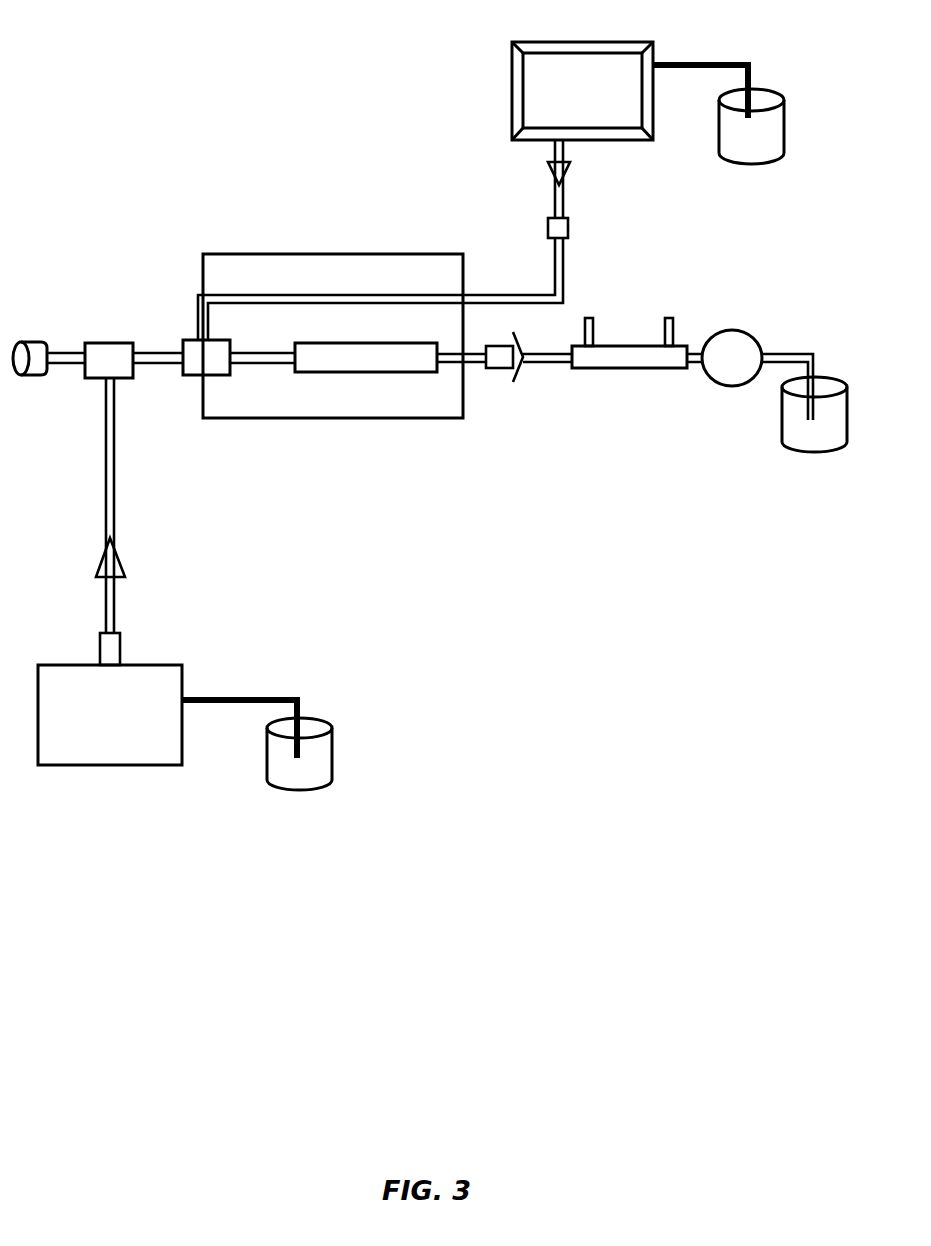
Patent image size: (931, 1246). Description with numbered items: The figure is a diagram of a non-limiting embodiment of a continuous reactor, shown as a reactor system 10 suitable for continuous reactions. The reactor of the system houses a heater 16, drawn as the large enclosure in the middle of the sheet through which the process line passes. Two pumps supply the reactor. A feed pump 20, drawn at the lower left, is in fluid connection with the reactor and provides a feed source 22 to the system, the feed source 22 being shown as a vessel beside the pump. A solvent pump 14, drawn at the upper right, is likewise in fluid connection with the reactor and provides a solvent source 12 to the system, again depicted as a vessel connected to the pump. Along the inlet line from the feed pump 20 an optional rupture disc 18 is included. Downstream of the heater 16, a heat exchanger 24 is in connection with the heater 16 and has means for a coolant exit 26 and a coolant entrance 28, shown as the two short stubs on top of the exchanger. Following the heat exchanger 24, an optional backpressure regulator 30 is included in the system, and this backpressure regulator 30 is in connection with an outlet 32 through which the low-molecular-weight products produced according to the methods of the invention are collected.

The reactor system 10 is at (138, 58).
The solvent source 12 is at (772, 92).
The solvent pump 14 is at (535, 42).
The heater 16 is at (215, 254).
The rupture disc 18 is at (31, 342).
The feed pump 20 is at (153, 665).
The feed source 22 is at (313, 720).
The heat exchanger 24 is at (625, 370).
The coolant exit 26 is at (590, 318).
The coolant entrance 28 is at (670, 318).
The backpressure regulator 30 is at (740, 332).
The outlet 32 is at (782, 418).